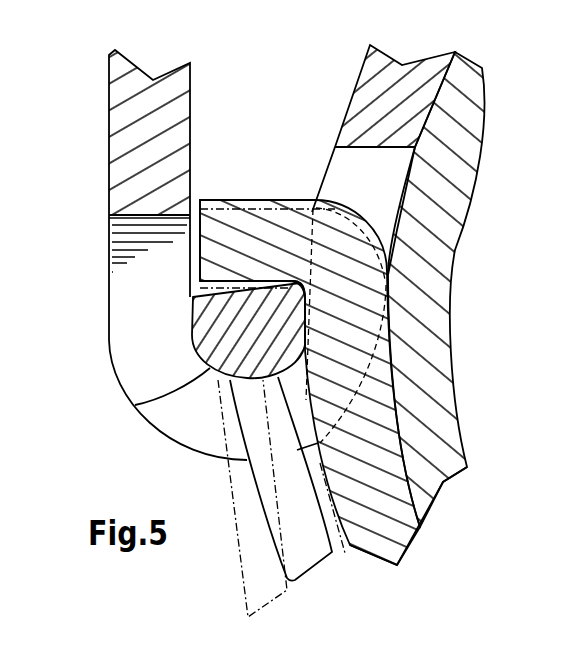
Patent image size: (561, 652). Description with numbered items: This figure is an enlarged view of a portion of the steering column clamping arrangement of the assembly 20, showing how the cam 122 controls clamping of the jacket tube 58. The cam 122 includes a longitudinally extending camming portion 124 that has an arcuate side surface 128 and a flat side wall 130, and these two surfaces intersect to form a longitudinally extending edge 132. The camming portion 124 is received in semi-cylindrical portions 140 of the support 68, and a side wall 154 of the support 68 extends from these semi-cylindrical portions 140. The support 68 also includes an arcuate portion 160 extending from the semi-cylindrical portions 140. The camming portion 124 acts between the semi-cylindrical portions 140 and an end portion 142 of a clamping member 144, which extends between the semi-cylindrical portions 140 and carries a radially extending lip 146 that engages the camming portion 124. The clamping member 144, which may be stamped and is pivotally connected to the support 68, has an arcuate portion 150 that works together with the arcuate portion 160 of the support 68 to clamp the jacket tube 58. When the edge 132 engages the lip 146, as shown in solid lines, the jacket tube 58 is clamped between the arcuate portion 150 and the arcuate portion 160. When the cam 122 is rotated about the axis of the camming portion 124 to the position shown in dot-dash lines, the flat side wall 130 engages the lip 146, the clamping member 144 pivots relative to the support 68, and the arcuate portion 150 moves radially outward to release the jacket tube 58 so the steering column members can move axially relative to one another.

The fastener assembly 20 is at (252, 62).
The support 68 is at (145, 112).
The side wall 154 is at (127, 170).
The radially extending lip 146 is at (210, 240).
The arcuate side surface 128 is at (135, 405).
The semi-cylindrical portions 140 is at (203, 440).
The camming portion 124 is at (243, 323).
The flat side wall 130 is at (270, 278).
The longitudinally extending edge 132 is at (288, 283).
The arcuate portion 160 is at (402, 92).
The end portion 142 is at (338, 242).
The jacket tube 58 is at (418, 275).
The arcuate portion 150 is at (410, 530).
The clamping member 144 is at (385, 533).
The cam 122 is at (307, 558).